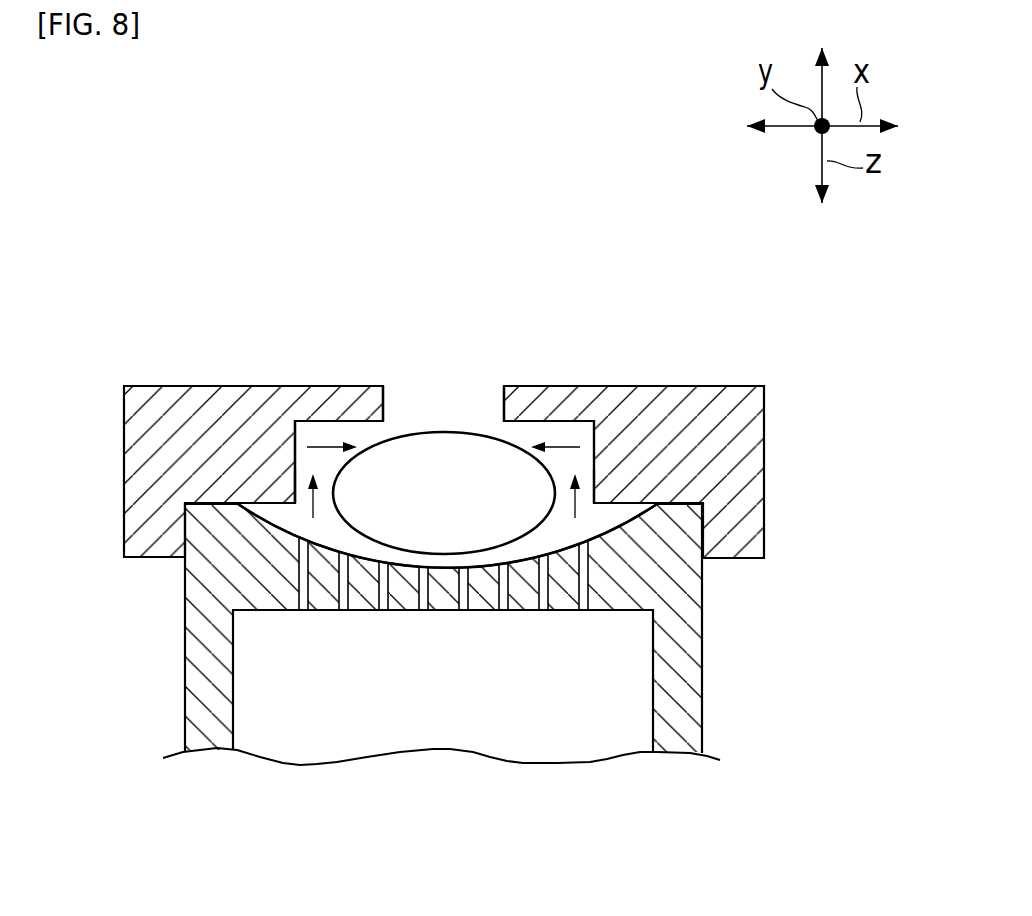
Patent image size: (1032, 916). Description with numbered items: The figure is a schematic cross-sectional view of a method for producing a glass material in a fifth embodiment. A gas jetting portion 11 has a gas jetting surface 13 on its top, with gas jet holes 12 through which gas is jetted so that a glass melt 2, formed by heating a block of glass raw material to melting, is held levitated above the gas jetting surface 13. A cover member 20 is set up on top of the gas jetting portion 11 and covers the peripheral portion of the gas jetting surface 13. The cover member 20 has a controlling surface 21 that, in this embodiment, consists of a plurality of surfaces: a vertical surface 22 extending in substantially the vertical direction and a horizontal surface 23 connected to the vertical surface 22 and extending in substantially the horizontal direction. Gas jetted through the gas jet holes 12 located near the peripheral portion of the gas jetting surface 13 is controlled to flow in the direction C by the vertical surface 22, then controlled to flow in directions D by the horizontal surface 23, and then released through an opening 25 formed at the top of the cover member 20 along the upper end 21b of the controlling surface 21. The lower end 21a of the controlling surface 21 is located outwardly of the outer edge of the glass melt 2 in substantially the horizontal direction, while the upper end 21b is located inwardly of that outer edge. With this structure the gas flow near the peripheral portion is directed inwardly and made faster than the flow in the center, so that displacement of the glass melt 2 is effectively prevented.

The glass melt 2 is at (467, 433).
The gas jetting portion 11 is at (509, 660).
The gas jet holes 12 is at (303, 600).
The gas jetting surface 13 is at (438, 570).
The cover member 20 is at (779, 452).
The controlling surface 21 is at (363, 313).
The lower end of the controlling surface 21a is at (298, 497).
The upper end of the controlling surface 21b is at (413, 413).
The vertical surface 22 is at (293, 477).
The horizontal surface 23 is at (317, 421).
The opening 25 is at (447, 397).
The direction C is at (317, 507).
The directions D is at (331, 447).